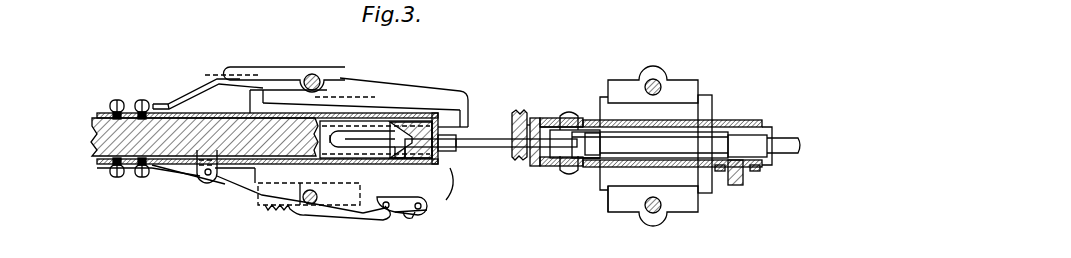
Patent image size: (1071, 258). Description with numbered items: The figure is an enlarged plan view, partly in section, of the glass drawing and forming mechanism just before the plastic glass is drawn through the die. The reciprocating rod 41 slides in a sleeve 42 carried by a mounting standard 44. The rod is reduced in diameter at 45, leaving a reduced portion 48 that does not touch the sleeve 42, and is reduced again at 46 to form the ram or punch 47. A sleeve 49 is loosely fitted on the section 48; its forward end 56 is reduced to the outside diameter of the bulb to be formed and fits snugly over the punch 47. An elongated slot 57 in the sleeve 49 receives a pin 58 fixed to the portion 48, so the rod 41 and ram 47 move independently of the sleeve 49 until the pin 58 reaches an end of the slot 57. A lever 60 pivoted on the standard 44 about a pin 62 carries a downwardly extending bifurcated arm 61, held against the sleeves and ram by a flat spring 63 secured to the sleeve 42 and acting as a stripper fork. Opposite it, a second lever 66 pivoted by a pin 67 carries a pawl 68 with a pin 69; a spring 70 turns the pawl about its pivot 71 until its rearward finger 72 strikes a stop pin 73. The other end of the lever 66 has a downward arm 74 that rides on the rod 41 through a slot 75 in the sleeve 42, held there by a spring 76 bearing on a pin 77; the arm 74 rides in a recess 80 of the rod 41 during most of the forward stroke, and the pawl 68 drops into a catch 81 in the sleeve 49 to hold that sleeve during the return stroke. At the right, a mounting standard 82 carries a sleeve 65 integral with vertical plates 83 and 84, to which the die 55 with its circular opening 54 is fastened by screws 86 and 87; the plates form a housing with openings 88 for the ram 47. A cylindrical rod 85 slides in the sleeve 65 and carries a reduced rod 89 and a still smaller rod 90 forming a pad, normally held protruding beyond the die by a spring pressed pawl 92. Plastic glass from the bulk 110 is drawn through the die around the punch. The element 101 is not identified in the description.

The reciprocating rod 41 is at (95, 133).
The sleeve 42 is at (193, 110).
The mounting standard 44 is at (250, 101).
The first reduction in diameter of the rod 45 is at (327, 128).
The second reduction in diameter of the rod 46 is at (400, 148).
The ram or punch 47 is at (468, 140).
The first reduced portion of the rod 48 is at (386, 125).
The sleeve 49 is at (378, 133).
The circular opening of the die 54 is at (532, 118).
The die 55 is at (540, 122).
The forward end of the sleeve 56 is at (447, 133).
The elongated slot 57 is at (350, 140).
The pin 58 is at (393, 160).
The lever 60 is at (433, 85).
The bifurcated arm 61 is at (467, 110).
The pin 62 is at (312, 73).
The flat spring 63 is at (207, 84).
The sleeve 65 is at (648, 168).
The second lever 66 is at (345, 202).
The pin 67 is at (292, 208).
The pawl 68 is at (450, 184).
The pin 69 is at (410, 214).
The spring 70 is at (372, 214).
The pivot 71 is at (428, 204).
The finger 72 is at (420, 166).
The stop pin 73 is at (420, 212).
The arm 74 is at (215, 170).
The slot 75 is at (187, 170).
The spring 76 is at (205, 180).
The pin 77 is at (222, 186).
The recess 80 is at (232, 160).
The catch 81 is at (365, 164).
The mounting standard 82 is at (713, 115).
The vertical plate 83 is at (592, 121).
The vertical plate 84 is at (588, 167).
The cylindrical rod 85 is at (678, 140).
The screw 86 is at (568, 112).
The screw 87 is at (562, 172).
The opening 88 is at (605, 129).
The cylindrical rod 89 is at (618, 143).
The pad 90 is at (536, 164).
The spring pressed pawl 92 is at (740, 184).
The pin 101 is at (437, 152).
The bulk of plastic glass 110 is at (517, 140).